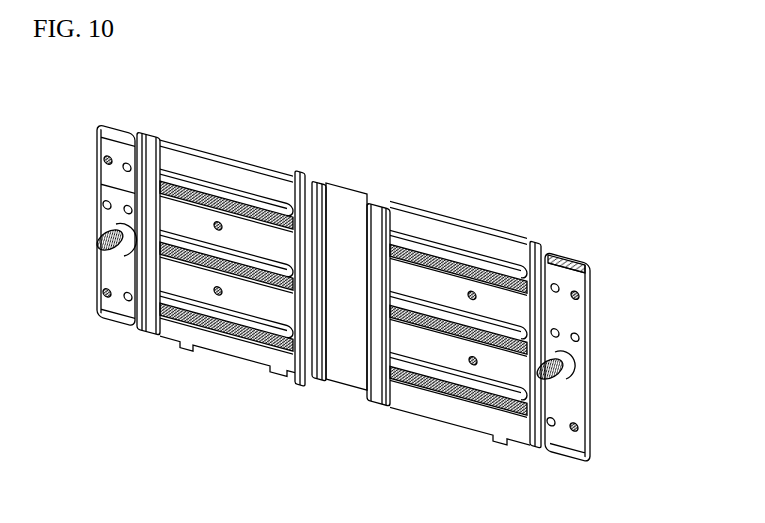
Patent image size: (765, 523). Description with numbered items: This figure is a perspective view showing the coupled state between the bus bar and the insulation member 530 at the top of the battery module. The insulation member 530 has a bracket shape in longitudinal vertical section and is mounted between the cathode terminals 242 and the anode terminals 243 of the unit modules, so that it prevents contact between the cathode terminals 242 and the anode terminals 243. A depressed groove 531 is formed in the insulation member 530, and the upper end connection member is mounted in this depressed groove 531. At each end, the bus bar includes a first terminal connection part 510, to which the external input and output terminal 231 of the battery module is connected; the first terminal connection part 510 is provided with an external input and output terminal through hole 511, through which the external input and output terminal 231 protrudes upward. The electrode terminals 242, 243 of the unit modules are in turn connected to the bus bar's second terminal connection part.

The first terminal connection part 510 is at (114, 185).
The external input and output terminal through hole 511 is at (565, 370).
The external input and output terminal 231 is at (102, 249).
The insulation member 530 is at (339, 281).
The depressed groove 531 is at (363, 187).
The cathode terminals 242 is at (223, 320).
The anode terminals 243 is at (465, 395).